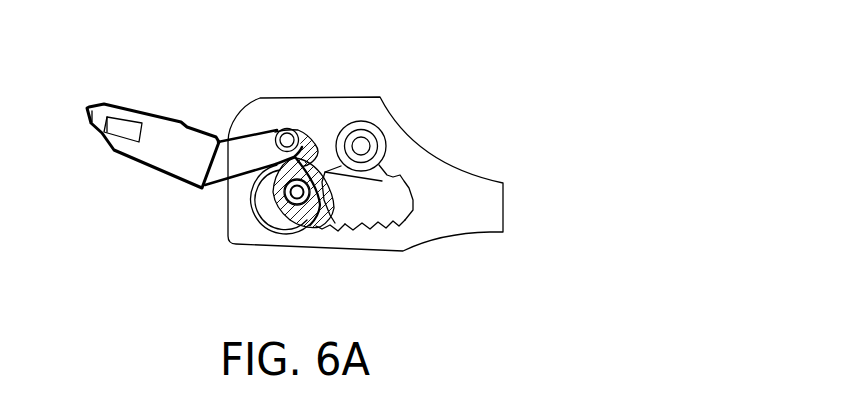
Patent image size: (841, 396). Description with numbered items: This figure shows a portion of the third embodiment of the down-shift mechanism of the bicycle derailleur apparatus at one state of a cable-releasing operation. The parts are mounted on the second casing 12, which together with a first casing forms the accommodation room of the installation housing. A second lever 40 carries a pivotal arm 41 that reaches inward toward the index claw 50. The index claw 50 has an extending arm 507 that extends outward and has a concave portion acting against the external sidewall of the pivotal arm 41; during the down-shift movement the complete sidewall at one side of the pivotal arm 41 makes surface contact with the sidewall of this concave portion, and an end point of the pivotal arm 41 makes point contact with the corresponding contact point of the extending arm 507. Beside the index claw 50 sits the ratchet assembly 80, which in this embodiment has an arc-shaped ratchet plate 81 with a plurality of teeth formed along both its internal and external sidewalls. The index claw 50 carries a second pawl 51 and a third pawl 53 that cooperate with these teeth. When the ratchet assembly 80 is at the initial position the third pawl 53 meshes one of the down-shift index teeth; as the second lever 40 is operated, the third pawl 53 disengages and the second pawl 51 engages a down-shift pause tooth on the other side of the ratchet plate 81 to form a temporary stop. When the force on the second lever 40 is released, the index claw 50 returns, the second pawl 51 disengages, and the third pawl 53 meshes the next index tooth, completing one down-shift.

The second casing 12 is at (357, 80).
The second lever 40 is at (108, 173).
The pivotal arm 41 is at (250, 153).
The extending arm 507 is at (315, 140).
The ratchet assembly 80 is at (375, 162).
The arc-shaped ratchet plate 81 is at (407, 220).
The index claw 50 is at (285, 213).
The third pawl 53 is at (315, 225).
The second pawl 51 is at (353, 225).